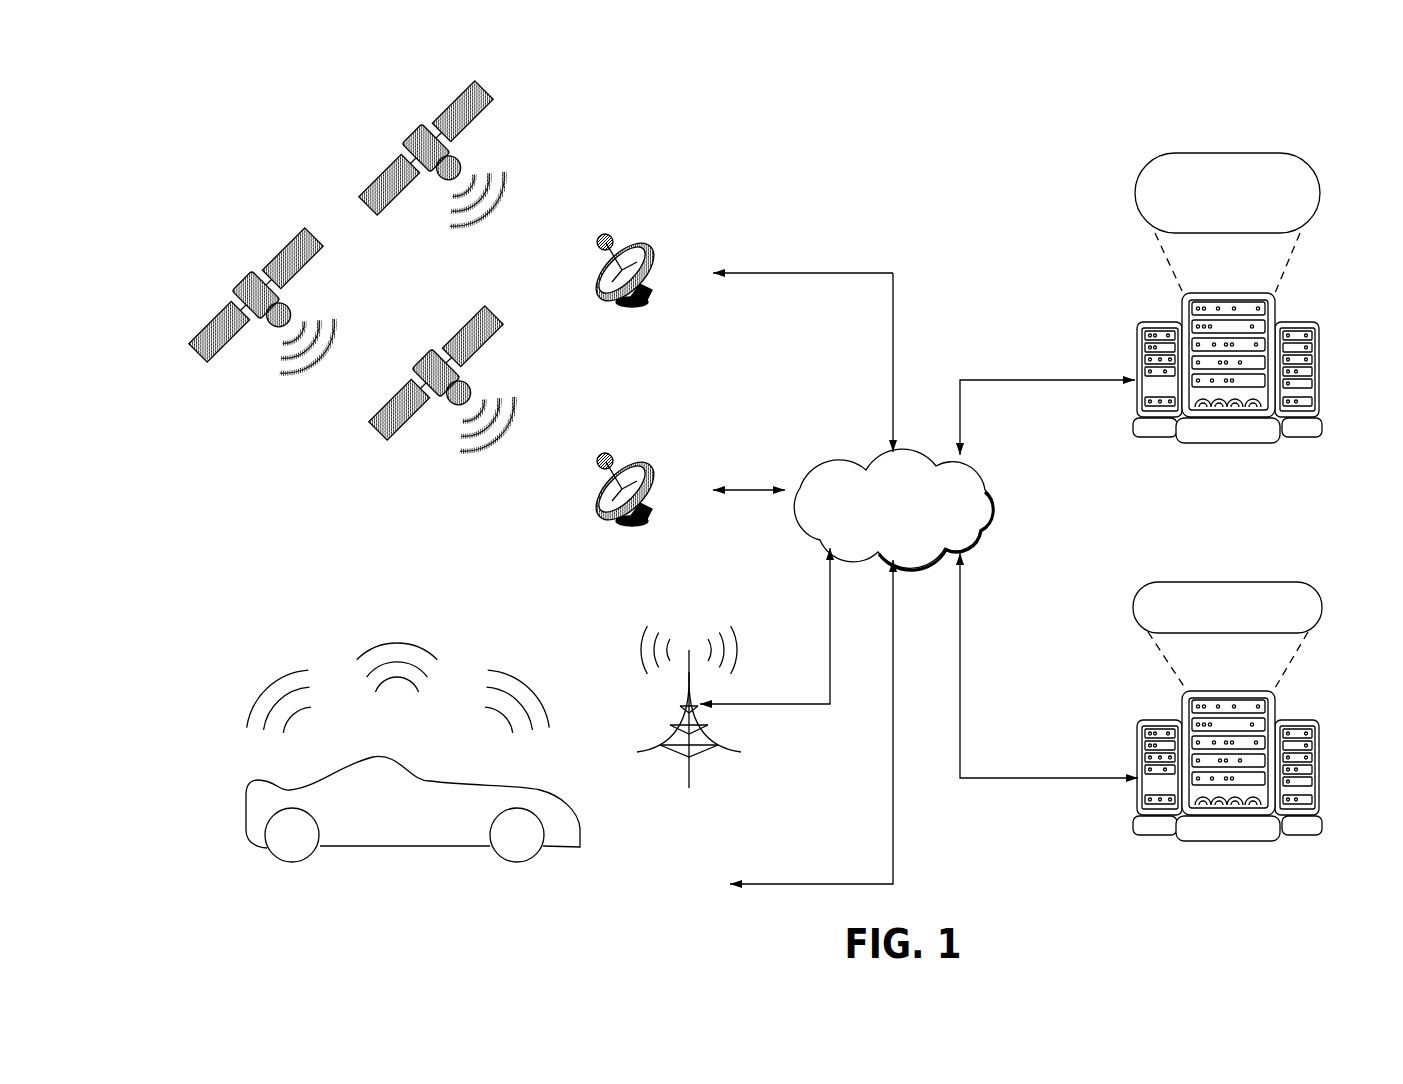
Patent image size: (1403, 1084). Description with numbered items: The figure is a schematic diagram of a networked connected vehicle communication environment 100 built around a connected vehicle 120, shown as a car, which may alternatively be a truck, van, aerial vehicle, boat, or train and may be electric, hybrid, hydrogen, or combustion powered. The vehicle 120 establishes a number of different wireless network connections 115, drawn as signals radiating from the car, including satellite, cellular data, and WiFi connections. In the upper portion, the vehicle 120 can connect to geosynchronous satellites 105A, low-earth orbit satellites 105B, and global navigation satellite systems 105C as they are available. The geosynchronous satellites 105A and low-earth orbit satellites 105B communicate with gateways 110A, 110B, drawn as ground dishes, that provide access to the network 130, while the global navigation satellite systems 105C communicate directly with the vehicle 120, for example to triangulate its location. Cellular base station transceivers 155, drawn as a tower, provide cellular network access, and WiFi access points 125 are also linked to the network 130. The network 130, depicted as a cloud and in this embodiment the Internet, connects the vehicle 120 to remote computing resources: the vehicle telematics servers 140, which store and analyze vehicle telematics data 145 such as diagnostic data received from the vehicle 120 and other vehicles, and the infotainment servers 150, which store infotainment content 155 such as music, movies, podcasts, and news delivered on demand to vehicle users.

The networked connected vehicle communication environment 100 is at (260, 75).
The geosynchronous satellites 105A is at (404, 144).
The low-earth orbit satellites 105B is at (417, 359).
The global navigation satellite systems 105C is at (233, 292).
The gateway 110A is at (713, 257).
The gateway 110B is at (712, 517).
The wireless network connections 115 is at (328, 595).
The connected vehicle 120 is at (245, 822).
The WiFi access points 125 is at (708, 875).
The network 130 is at (893, 509).
The vehicle telematics servers 140 is at (1139, 405).
The vehicle telematics data 145 is at (1227, 223).
The infotainment servers 150 is at (1139, 729).
The cellular base station transceivers 155 is at (683, 777).